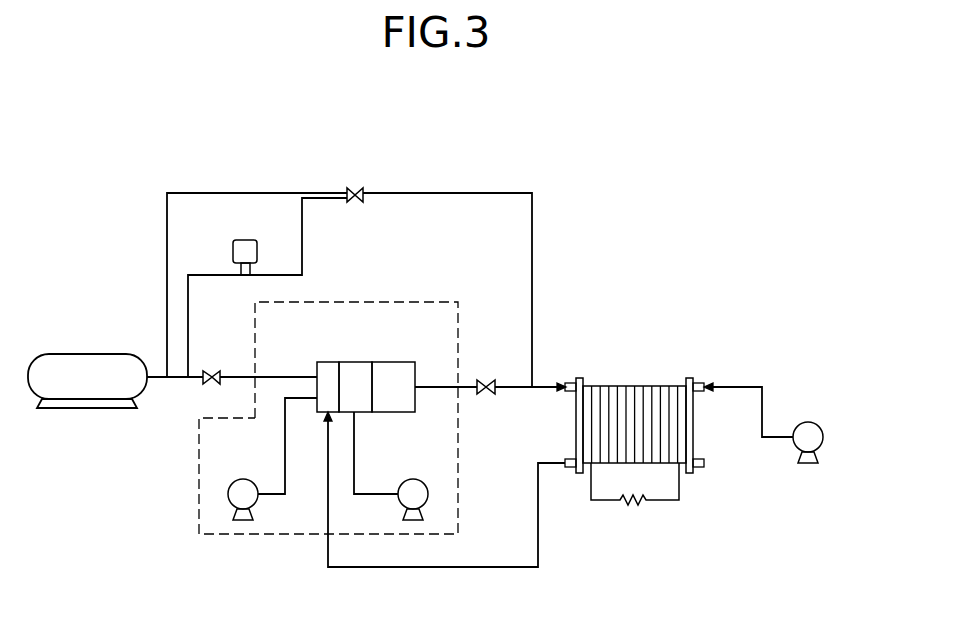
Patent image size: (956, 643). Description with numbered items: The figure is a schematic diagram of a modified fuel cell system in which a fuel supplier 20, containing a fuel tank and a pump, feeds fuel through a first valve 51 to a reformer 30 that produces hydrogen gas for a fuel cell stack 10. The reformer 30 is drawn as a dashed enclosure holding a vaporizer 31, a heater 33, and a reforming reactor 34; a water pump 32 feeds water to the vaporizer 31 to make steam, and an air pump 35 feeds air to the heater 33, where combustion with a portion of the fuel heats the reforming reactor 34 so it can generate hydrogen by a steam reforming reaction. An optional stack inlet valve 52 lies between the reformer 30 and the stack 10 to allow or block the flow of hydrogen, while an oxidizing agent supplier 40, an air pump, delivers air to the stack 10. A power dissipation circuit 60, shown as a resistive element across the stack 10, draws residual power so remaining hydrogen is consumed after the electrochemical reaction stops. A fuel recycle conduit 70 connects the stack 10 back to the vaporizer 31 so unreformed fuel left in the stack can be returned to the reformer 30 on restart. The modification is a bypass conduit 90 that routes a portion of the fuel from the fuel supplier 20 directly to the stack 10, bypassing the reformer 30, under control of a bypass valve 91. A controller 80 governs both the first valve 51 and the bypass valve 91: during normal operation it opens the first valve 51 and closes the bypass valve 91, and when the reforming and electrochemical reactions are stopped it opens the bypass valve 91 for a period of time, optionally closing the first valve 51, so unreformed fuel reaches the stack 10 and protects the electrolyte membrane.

The fuel cell stack 10 is at (644, 383).
The fuel supplier 20 is at (85, 355).
The reformer 30 is at (422, 302).
The vaporizer 31 is at (327, 362).
The water pump 32 is at (233, 481).
The heater 33 is at (361, 362).
The reforming reactor 34 is at (402, 362).
The air pump 35 is at (424, 481).
The oxidizing agent supplier 40 is at (812, 423).
The first valve 51 is at (210, 371).
The stack inlet valve 52 is at (490, 380).
The power dissipation circuit 60 is at (633, 505).
The fuel recycle conduit 70 is at (438, 567).
The controller 80 is at (245, 240).
The bypass conduit 90 is at (460, 193).
The bypass valve 91 is at (352, 188).